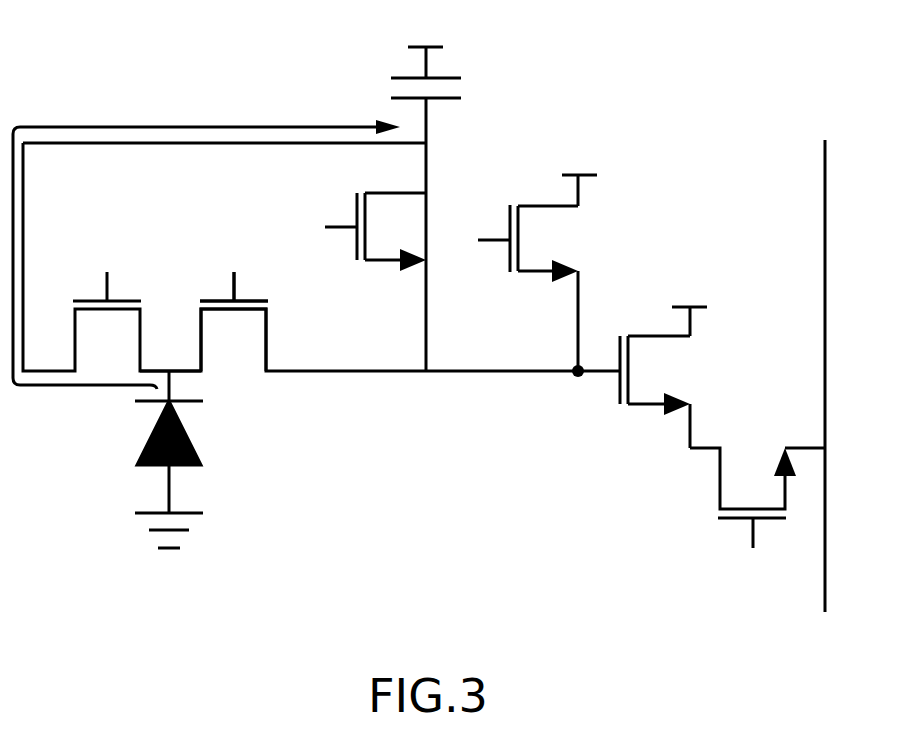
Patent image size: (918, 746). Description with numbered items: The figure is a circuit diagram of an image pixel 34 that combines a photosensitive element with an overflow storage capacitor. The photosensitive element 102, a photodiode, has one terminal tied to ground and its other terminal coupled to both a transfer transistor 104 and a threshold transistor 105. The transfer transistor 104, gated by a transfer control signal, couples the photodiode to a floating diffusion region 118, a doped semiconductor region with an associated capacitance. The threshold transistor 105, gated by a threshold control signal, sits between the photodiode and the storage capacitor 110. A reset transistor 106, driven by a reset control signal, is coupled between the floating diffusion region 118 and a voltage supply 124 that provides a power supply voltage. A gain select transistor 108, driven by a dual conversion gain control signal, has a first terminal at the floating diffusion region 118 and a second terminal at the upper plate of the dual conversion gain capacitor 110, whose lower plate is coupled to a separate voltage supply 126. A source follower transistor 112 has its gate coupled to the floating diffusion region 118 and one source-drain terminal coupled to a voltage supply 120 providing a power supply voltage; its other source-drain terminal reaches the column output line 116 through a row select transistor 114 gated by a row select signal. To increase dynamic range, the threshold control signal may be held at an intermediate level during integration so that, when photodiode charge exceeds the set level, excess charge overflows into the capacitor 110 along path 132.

The image pixel 34 is at (113, 74).
The photosensitive element 102 is at (190, 432).
The transfer transistor 104 is at (300, 342).
The threshold transistor 105 is at (160, 338).
The reset transistor 106 is at (605, 238).
The gain select transistor 108 is at (360, 176).
The storage capacitor 110 is at (355, 84).
The source follower transistor 112 is at (722, 340).
The row select transistor 114 is at (688, 522).
The column output line 116 is at (827, 328).
The floating diffusion region 118 is at (556, 350).
The voltage supply 120 is at (703, 306).
The voltage supply 124 is at (566, 173).
The voltage supply 126 is at (440, 46).
The path 132 is at (193, 127).